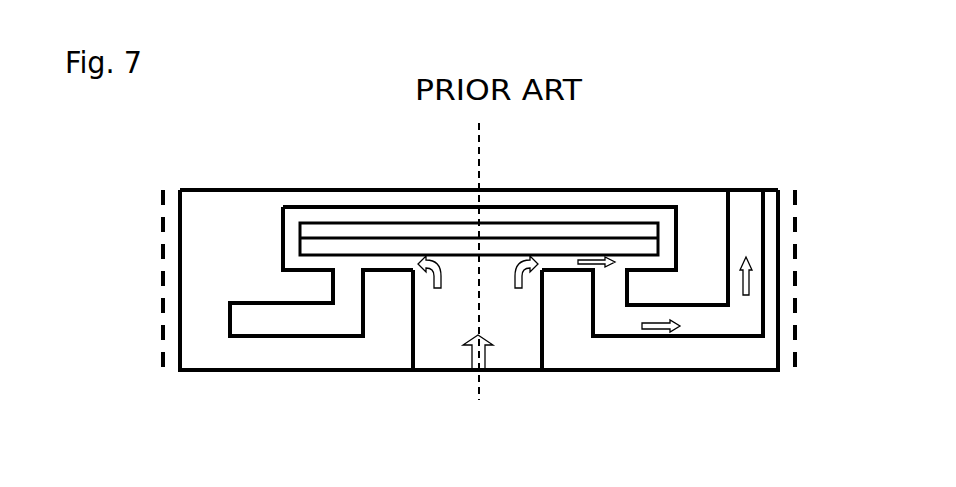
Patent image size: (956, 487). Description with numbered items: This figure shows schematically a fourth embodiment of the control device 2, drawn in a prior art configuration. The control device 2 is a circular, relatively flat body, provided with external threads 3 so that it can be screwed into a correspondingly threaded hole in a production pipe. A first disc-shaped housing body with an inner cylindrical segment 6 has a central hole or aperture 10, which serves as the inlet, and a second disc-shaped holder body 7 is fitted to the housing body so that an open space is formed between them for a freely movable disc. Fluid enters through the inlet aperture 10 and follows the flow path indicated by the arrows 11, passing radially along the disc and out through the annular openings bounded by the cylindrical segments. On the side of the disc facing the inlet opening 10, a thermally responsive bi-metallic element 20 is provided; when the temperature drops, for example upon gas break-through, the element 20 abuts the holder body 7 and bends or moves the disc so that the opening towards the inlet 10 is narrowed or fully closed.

The control device 2 is at (261, 394).
The external threads 3 is at (790, 200).
The inner cylindrical segment 6 is at (560, 320).
The second disc-shaped holder body 7 is at (345, 188).
The central hole or aperture 10 is at (445, 303).
The flow path arrows 11 is at (480, 371).
The bi-metallic element 20 is at (395, 248).